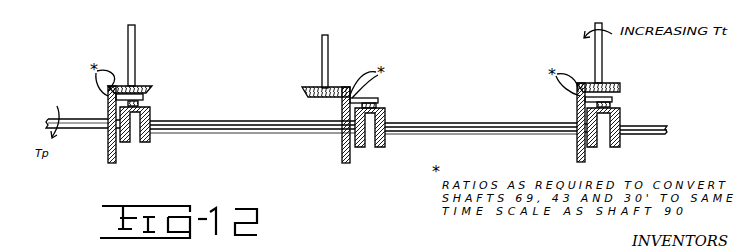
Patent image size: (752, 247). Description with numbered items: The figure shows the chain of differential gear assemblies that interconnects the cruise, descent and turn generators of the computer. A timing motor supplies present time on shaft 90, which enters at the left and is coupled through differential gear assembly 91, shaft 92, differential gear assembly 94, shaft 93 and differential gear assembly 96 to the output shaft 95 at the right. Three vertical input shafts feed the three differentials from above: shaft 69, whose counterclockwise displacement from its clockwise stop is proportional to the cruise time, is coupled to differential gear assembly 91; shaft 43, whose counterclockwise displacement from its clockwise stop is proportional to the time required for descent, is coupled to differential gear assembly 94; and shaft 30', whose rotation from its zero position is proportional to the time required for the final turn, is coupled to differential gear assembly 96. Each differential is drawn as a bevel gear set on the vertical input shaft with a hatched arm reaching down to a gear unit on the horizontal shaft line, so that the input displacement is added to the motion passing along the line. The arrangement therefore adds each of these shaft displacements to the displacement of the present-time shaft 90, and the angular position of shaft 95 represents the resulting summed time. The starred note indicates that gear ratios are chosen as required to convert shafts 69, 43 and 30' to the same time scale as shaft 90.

The shaft 69 is at (136, 47).
The shaft 43 is at (328, 60).
The shaft 30' is at (618, 53).
The shaft 90 is at (89, 129).
The differential gear assembly 91 is at (136, 144).
The shaft 92 is at (260, 133).
The shaft 93 is at (492, 123).
The differential gear assembly 94 is at (366, 149).
The shaft 95 is at (645, 126).
The differential gear assembly 96 is at (604, 145).